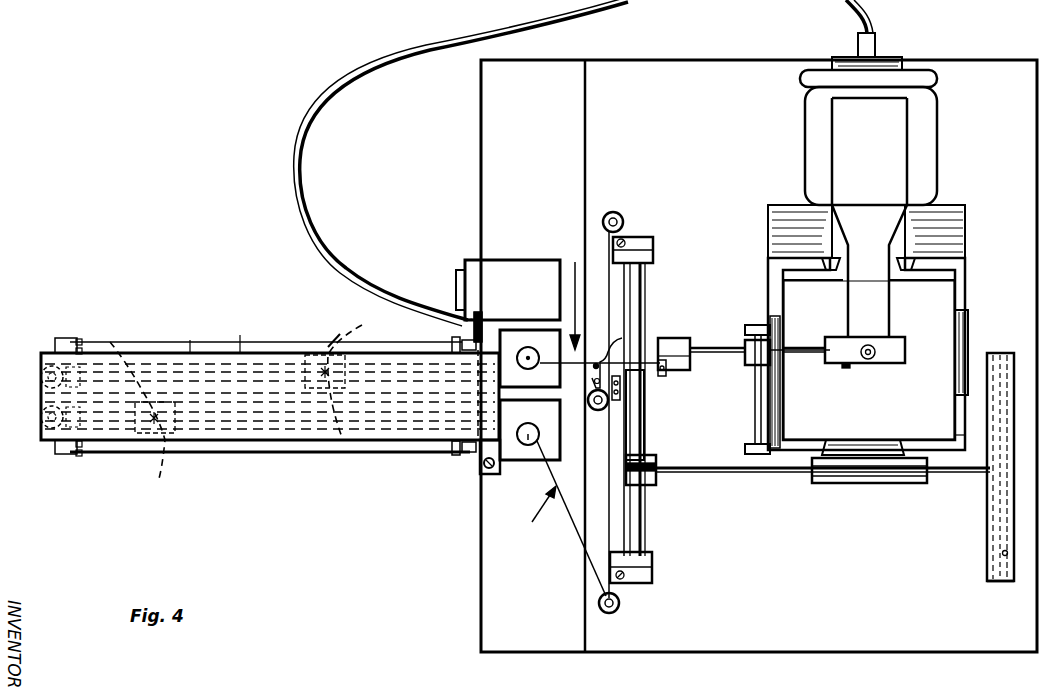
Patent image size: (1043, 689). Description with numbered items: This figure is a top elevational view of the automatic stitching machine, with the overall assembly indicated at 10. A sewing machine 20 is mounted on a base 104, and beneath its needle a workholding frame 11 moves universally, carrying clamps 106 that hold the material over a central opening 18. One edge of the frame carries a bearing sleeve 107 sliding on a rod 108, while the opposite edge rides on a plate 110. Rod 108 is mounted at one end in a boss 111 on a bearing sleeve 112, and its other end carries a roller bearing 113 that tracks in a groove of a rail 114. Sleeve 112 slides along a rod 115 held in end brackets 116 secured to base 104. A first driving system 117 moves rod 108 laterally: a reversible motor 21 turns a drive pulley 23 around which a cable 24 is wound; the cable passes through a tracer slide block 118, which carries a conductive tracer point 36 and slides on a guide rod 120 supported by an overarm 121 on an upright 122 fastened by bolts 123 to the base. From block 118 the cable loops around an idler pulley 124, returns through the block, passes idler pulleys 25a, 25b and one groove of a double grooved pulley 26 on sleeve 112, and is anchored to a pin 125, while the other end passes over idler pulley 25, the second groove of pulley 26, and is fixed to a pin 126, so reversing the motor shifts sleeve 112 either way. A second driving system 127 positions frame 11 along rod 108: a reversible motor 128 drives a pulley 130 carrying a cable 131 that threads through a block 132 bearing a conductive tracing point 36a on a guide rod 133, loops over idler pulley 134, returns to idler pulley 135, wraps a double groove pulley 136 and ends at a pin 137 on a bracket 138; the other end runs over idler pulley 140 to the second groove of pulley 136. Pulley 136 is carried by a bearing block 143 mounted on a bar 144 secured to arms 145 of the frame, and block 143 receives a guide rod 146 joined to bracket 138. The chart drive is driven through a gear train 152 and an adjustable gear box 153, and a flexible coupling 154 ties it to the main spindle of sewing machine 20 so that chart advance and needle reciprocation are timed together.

The support bracket assembly 10 is at (968, 269).
The workholding frame 11 is at (954, 408).
The central opening 18 is at (820, 436).
The sewing machine 20 is at (898, 157).
The reversible motor 21 is at (520, 462).
The drive pulley 23 is at (534, 406).
The cable 24 is at (578, 548).
The idler pulley 25 is at (610, 613).
The idler pulley 25a is at (598, 412).
The idler pulley 25b is at (614, 212).
The double grooved pulley 26 is at (622, 432).
The conductive tracer point 36 is at (137, 424).
The conductive tracing point 36a is at (363, 376).
The base 104 is at (686, 655).
The clamps 106 is at (826, 256).
The bearing sleeve 107 is at (888, 476).
The rod 108 is at (748, 473).
The plate 110 is at (945, 222).
The boss 111 is at (650, 488).
The bearing sleeve 112 is at (648, 444).
The roller bearing 113 is at (992, 492).
The rail 114 is at (1006, 582).
The rod 115 is at (646, 310).
The end brackets 116 is at (654, 246).
The driving system 117 is at (537, 515).
The tracer slide block 118 is at (135, 428).
The guide rod 120 is at (226, 456).
The overarm 121 is at (196, 354).
The upright 122 is at (486, 462).
The bolts 123 is at (480, 492).
The idler pulley 124 is at (47, 433).
The pin 125 is at (628, 240).
The pin 126 is at (632, 582).
The second driving system 127 is at (574, 293).
The reversible motor 128 is at (506, 336).
The drive pulley 130 is at (530, 347).
The cable 131 is at (508, 380).
The block 132 is at (320, 354).
The guide rod 133 is at (242, 356).
The idler pulley 134 is at (50, 366).
The idler pulley 135 is at (628, 332).
The double groove pulley 136 is at (768, 386).
The pin 137 is at (664, 378).
The bracket 138 is at (680, 344).
The idler pulley 140 is at (858, 366).
The bearing block 143 is at (750, 340).
The bar 144 is at (755, 425).
The arms 145 is at (756, 325).
The guide rod 146 is at (810, 346).
The gear train 152 is at (470, 322).
The adjustable gear box 153 is at (512, 272).
The flexible coupling 154 is at (545, 12).